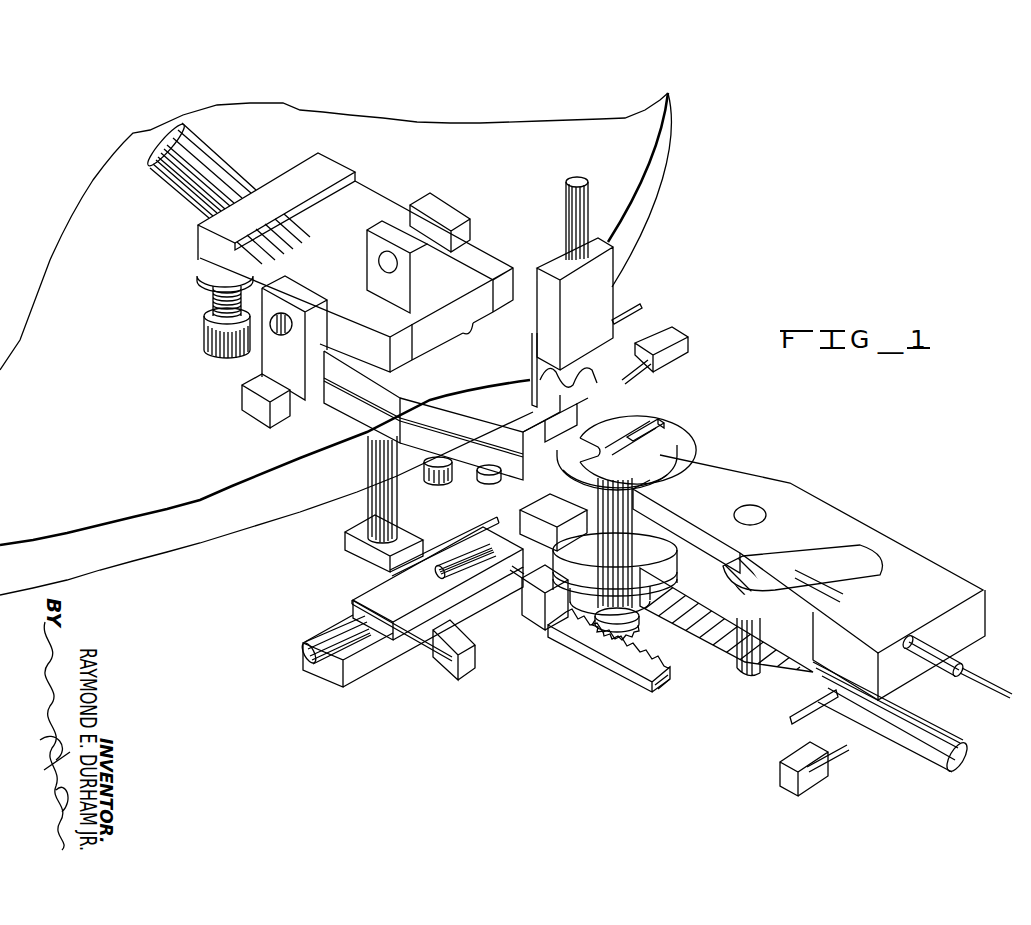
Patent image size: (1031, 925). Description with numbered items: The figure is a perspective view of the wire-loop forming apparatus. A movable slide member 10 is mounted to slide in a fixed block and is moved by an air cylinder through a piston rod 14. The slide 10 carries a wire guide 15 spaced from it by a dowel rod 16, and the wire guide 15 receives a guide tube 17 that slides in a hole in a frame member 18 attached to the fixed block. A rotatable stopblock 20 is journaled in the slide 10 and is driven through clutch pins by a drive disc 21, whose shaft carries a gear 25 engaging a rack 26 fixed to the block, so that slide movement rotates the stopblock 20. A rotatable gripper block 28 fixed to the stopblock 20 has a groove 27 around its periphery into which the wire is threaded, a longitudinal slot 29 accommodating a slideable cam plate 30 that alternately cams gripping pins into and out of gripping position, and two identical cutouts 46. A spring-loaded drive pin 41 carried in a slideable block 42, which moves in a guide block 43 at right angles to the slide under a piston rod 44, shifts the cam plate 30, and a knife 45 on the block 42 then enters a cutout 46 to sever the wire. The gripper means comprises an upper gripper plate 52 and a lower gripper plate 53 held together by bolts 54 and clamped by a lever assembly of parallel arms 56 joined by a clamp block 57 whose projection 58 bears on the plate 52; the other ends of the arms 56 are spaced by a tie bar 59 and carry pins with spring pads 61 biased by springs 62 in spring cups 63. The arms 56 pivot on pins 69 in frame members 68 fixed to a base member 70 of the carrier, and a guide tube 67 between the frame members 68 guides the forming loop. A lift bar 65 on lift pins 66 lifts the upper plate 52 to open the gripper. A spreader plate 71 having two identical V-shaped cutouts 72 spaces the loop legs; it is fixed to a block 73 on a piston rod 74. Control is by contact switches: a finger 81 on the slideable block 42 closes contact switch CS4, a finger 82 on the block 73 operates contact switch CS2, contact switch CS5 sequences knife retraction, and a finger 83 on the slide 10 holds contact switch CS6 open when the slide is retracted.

The movable slide member 10 is at (790, 683).
The piston rod 14 is at (928, 745).
The wire guide 15 is at (713, 474).
The dowel rod 16 is at (741, 666).
The guide tube 17 is at (965, 668).
The frame member 18 is at (890, 540).
The rotatable stopblock 20 is at (570, 578).
The drive disc 21 is at (636, 610).
The gear 25 is at (634, 629).
The rack 26 is at (625, 671).
The groove 27 is at (660, 430).
The rotatable gripper block 28 is at (618, 420).
The slot 29 is at (588, 522).
The slideable cam plate 30 is at (528, 537).
The spring-loaded drive pin 41 is at (488, 553).
The slideable block 42 is at (372, 590).
The guide block 43 is at (356, 678).
The piston rod 44 is at (316, 637).
The knife 45 is at (487, 528).
The cutouts 46 is at (632, 442).
The upper gripper plate 52 is at (485, 385).
The lower gripper plate 53 is at (362, 418).
The bolts 54 is at (426, 471).
The parallel spaced arms 56 is at (478, 255).
The clamp block 57 is at (444, 289).
The projection 58 is at (423, 356).
The tie bar 59 is at (333, 167).
The spring pads 61 is at (203, 279).
The springs 62 is at (212, 298).
The spring cups 63 is at (206, 326).
The lift bar 65 is at (344, 540).
The lift pins 66 is at (371, 531).
The guide tube 67 is at (173, 178).
The frame members 68 is at (450, 207).
The pins 69 is at (392, 264).
The base member 70 is at (233, 530).
The bracket 71 is at (535, 359).
The V-shaped cutouts 72 is at (590, 397).
The block 73 is at (612, 294).
The piston rod 74 is at (586, 196).
The finger 81 is at (352, 602).
The pin 82 is at (638, 319).
The finger 83 is at (785, 710).
The contact switch CS2 is at (672, 355).
The contact switch CS4 is at (528, 606).
The contact switch CS5 is at (476, 664).
The contact switch CS6 is at (780, 765).